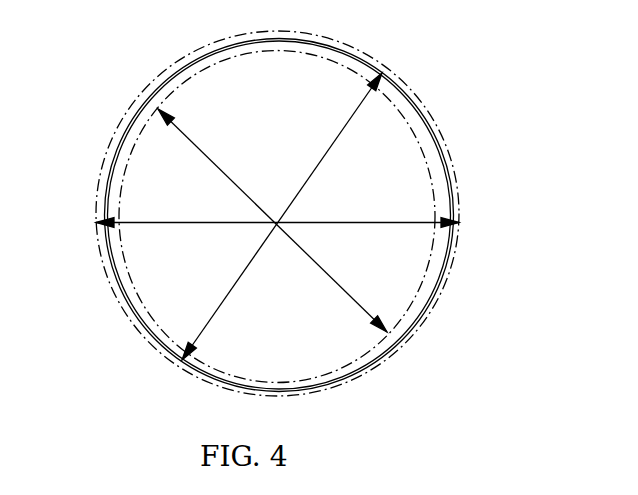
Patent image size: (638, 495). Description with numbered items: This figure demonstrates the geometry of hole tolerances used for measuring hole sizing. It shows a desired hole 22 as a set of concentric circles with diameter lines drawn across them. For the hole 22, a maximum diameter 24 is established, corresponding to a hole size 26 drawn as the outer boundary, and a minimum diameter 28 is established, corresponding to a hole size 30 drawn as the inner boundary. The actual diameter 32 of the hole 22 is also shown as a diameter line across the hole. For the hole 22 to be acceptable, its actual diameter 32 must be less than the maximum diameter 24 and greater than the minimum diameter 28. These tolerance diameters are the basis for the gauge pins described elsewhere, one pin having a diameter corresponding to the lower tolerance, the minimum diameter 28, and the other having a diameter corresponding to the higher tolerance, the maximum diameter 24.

The hole 22 is at (408, 102).
The maximum diameter 24 is at (338, 222).
The hole size 26 is at (452, 162).
The minimum diameter 28 is at (218, 167).
The hole size 30 is at (182, 83).
The actual diameter 32 is at (243, 273).